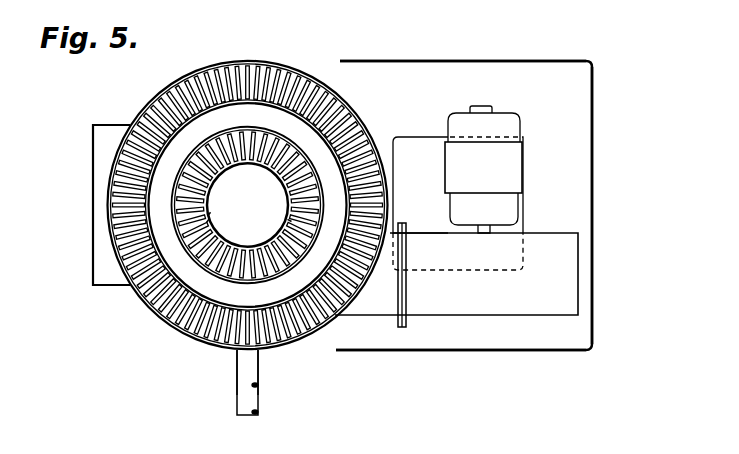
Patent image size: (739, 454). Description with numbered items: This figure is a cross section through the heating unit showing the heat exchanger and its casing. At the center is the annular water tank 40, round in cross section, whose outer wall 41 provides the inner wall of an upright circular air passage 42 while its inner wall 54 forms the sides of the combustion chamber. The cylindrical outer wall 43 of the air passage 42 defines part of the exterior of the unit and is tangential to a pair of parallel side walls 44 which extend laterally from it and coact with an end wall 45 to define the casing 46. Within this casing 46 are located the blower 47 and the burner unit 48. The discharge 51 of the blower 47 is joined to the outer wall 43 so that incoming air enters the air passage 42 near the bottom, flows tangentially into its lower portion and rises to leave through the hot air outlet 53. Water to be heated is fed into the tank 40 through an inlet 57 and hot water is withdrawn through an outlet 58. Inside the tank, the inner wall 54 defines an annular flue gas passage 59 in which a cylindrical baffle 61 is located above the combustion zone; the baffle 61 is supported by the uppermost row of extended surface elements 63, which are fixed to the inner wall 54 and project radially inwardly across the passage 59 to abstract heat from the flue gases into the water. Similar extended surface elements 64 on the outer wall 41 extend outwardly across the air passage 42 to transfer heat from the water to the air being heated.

The water tank 40 is at (280, 300).
The outer wall 41 is at (214, 302).
The air passage 42 is at (163, 318).
The outer wall 43 is at (140, 292).
The side walls 44 is at (503, 59).
The end wall 45 is at (596, 198).
The casing 46 is at (628, 55).
The blower 47 is at (508, 302).
The burner unit 48 is at (426, 185).
The discharge 51 is at (381, 310).
The hot air outlet 53 is at (93, 252).
The inner wall 54 is at (292, 222).
The inlet 57 is at (237, 398).
The outlet 58 is at (237, 370).
The annular flue gas passage 59 is at (291, 184).
The cylindrical baffle 61 is at (210, 218).
The extended surface elements 63 is at (212, 229).
The extended surface elements 64 is at (182, 333).